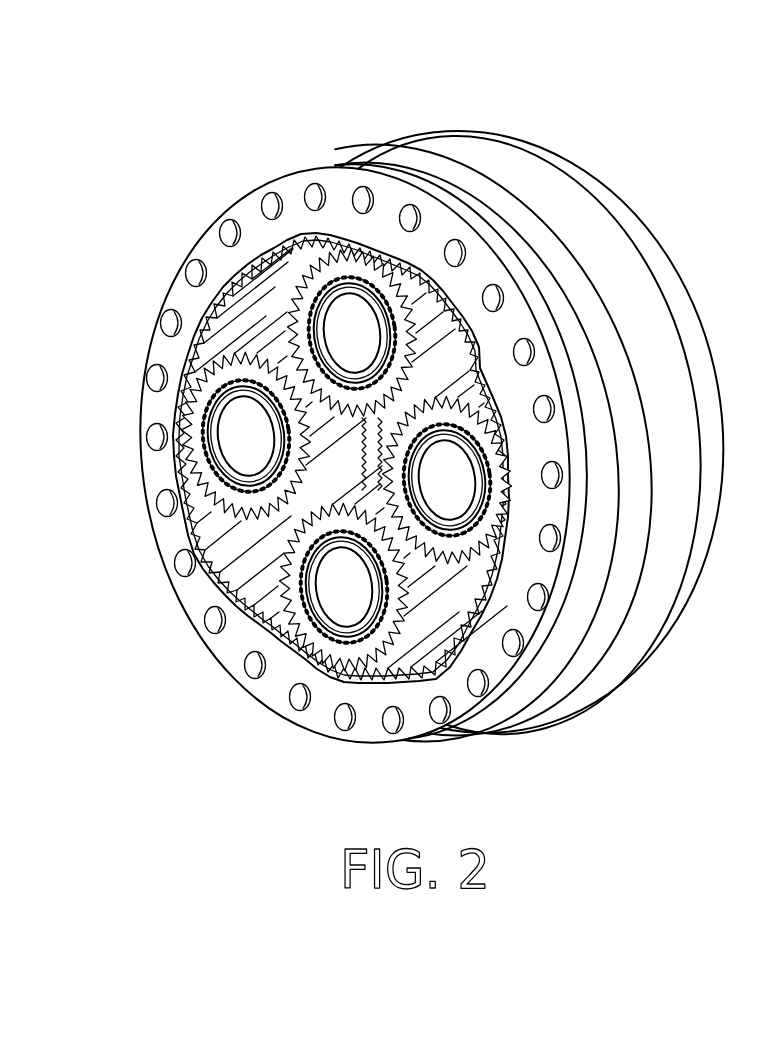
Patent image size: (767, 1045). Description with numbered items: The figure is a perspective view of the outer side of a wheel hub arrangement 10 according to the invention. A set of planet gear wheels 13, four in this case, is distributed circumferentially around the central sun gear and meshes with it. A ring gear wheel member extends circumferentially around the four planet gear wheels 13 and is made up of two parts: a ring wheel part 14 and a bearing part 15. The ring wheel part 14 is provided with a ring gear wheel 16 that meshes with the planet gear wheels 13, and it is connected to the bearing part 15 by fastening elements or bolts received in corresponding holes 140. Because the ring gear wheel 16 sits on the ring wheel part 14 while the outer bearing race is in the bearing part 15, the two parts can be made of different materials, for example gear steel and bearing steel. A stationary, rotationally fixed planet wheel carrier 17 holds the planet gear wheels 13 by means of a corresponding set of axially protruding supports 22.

The wheel hub arrangement 10 is at (386, 457).
The planet gear wheels 13 is at (286, 392).
The ring wheel part 14 is at (355, 474).
The holes 140 is at (267, 205).
The bearing part 15 is at (593, 652).
The ring gear wheel 16 is at (230, 273).
The planet wheel carrier 17 is at (185, 421).
The supports 22 is at (243, 438).